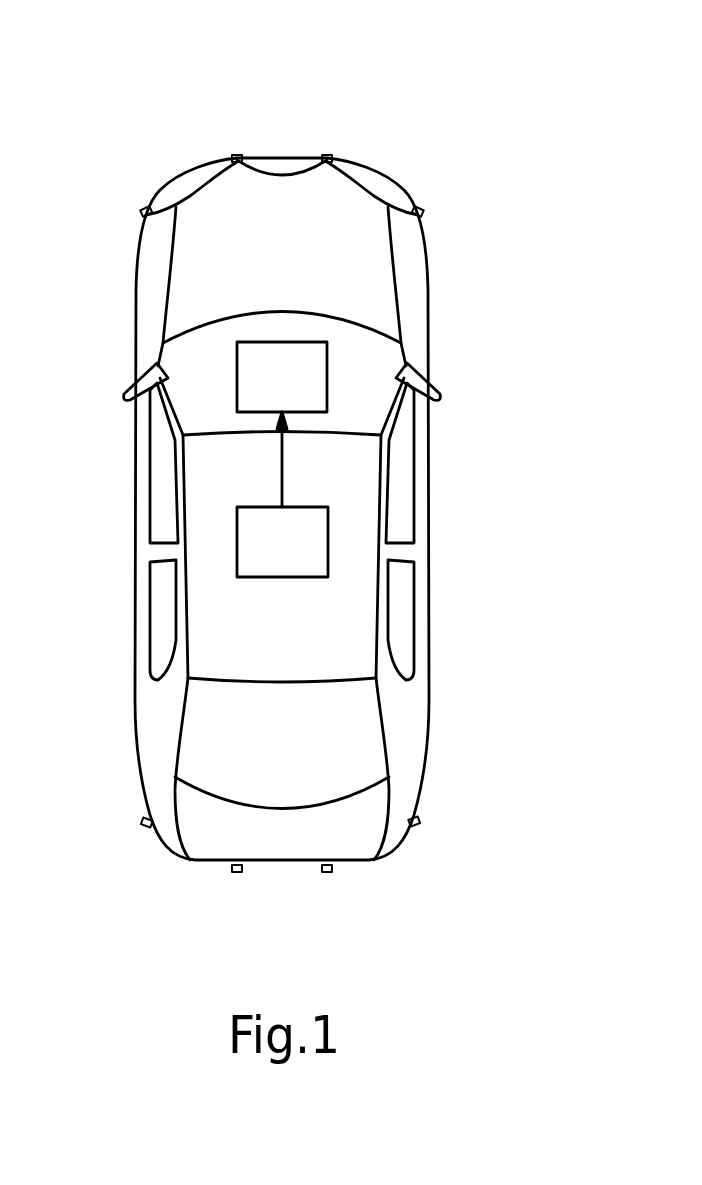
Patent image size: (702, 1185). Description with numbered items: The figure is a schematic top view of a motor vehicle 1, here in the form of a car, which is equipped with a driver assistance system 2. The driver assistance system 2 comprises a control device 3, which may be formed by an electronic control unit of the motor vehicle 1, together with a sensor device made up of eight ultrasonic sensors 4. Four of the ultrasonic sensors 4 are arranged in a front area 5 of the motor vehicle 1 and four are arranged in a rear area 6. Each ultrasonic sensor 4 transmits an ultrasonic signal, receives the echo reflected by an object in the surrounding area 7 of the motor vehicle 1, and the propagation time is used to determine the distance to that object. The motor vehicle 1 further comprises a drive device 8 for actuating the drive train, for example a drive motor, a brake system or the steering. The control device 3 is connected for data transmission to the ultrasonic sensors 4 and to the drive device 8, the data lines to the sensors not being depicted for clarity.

The motor vehicle 1 is at (280, 160).
The driver assistance system 2 is at (205, 475).
The control device 3 is at (310, 530).
The ultrasonic sensor 4 is at (235, 156).
The front area 5 is at (355, 70).
The rear area 6 is at (270, 914).
The surrounding area 7 is at (83, 369).
The drive device 8 is at (313, 363).